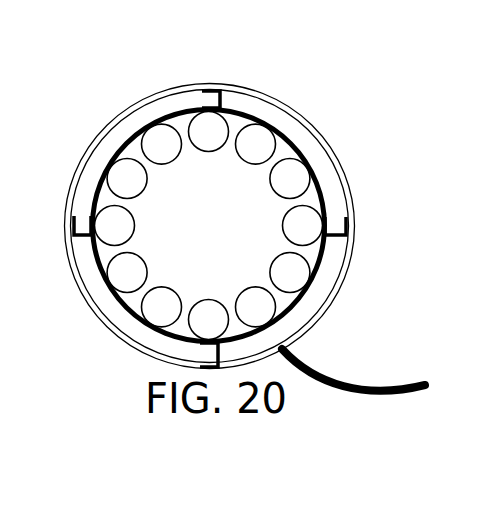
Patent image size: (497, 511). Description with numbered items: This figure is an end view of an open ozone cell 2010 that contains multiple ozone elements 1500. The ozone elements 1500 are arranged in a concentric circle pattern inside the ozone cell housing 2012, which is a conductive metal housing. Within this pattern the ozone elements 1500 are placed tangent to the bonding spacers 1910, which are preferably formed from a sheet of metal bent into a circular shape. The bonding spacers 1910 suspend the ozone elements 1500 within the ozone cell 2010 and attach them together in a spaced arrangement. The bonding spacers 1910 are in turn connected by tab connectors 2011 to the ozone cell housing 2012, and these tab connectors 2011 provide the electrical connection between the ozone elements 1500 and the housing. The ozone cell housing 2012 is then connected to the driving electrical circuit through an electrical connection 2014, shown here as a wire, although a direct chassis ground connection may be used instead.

The open ozone cell 2010 is at (96, 88).
The ozone cell housing 2012 is at (258, 90).
The bonding spacers 1910 is at (285, 137).
The ozone elements 1500 is at (311, 181).
The tab connectors 2011 is at (347, 231).
The electrical connection 2014 is at (383, 393).